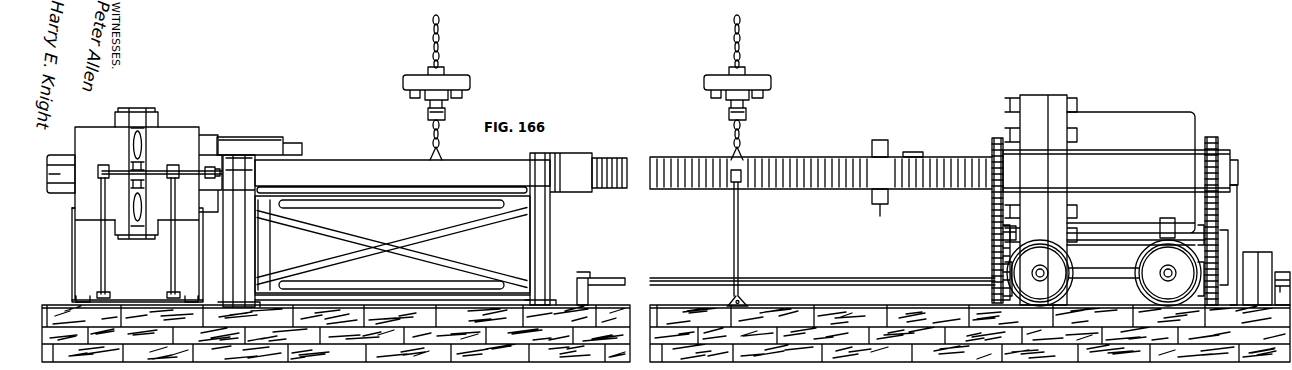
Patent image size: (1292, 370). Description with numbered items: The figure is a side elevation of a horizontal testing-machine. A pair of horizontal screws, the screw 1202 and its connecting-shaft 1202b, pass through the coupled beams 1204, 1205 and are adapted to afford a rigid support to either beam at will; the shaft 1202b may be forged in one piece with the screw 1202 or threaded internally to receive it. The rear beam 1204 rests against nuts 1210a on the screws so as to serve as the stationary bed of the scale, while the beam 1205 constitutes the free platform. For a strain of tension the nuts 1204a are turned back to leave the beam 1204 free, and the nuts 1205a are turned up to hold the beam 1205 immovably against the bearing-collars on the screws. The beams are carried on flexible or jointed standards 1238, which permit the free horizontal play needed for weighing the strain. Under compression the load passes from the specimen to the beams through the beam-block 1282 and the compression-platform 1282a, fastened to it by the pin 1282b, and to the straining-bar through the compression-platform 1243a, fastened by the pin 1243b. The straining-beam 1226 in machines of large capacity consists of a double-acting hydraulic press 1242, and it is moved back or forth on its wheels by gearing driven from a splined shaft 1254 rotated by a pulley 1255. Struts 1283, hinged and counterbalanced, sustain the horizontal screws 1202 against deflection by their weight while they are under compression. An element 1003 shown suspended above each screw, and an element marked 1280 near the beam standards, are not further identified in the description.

The hoist block 1003 is at (599, 87).
The horizontal screw 1202 is at (821, 168).
The connecting-shaft of horizontal screw 1202b is at (402, 170).
The rear beam 1204 is at (147, 214).
The beam 1205 is at (147, 173).
The nuts 1210a is at (61, 174).
The nuts 1204a is at (106, 168).
The nuts 1205a is at (169, 168).
The flexible or jointed standards 1238 is at (138, 238).
The lower frame 1280 is at (137, 255).
The beam-block 1282 is at (239, 225).
The compression-platform 1282a is at (266, 144).
The pin 1282b is at (186, 151).
The struts 1283 is at (745, 238).
The splined shaft 1254 is at (786, 286).
The compression-platform 1243a is at (872, 178).
The pin 1243b is at (911, 149).
The straining-beam 1226 is at (1120, 171).
The double-acting hydraulic press 1242 is at (1114, 200).
The pulley 1255 is at (1266, 273).